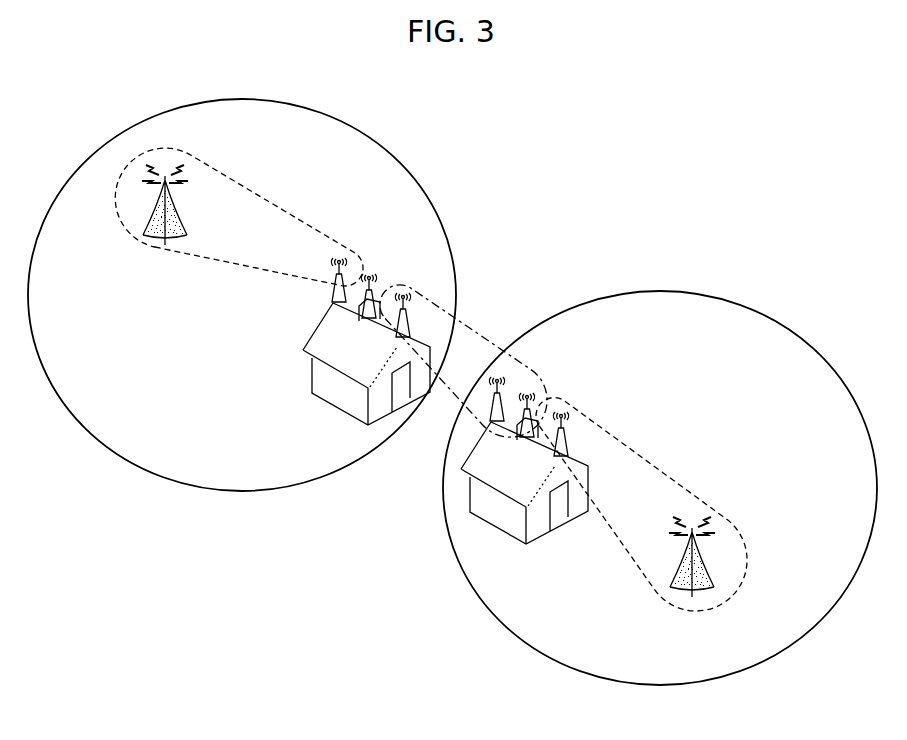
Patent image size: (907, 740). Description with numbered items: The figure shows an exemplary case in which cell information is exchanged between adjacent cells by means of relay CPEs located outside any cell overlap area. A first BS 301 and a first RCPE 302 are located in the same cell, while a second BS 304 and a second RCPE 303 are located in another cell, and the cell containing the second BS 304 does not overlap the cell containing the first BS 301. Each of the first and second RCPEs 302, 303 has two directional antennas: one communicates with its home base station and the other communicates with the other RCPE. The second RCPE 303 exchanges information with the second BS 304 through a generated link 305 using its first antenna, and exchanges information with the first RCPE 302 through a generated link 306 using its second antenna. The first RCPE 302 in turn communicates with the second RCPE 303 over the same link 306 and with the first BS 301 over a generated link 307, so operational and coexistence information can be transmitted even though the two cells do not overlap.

The first BS 301 is at (700, 581).
The first RCPE 302 is at (529, 488).
The second RCPE 303 is at (333, 362).
The second BS 304 is at (151, 226).
The generated link 305 is at (263, 193).
The generated link 306 is at (472, 330).
The generated link 307 is at (653, 462).